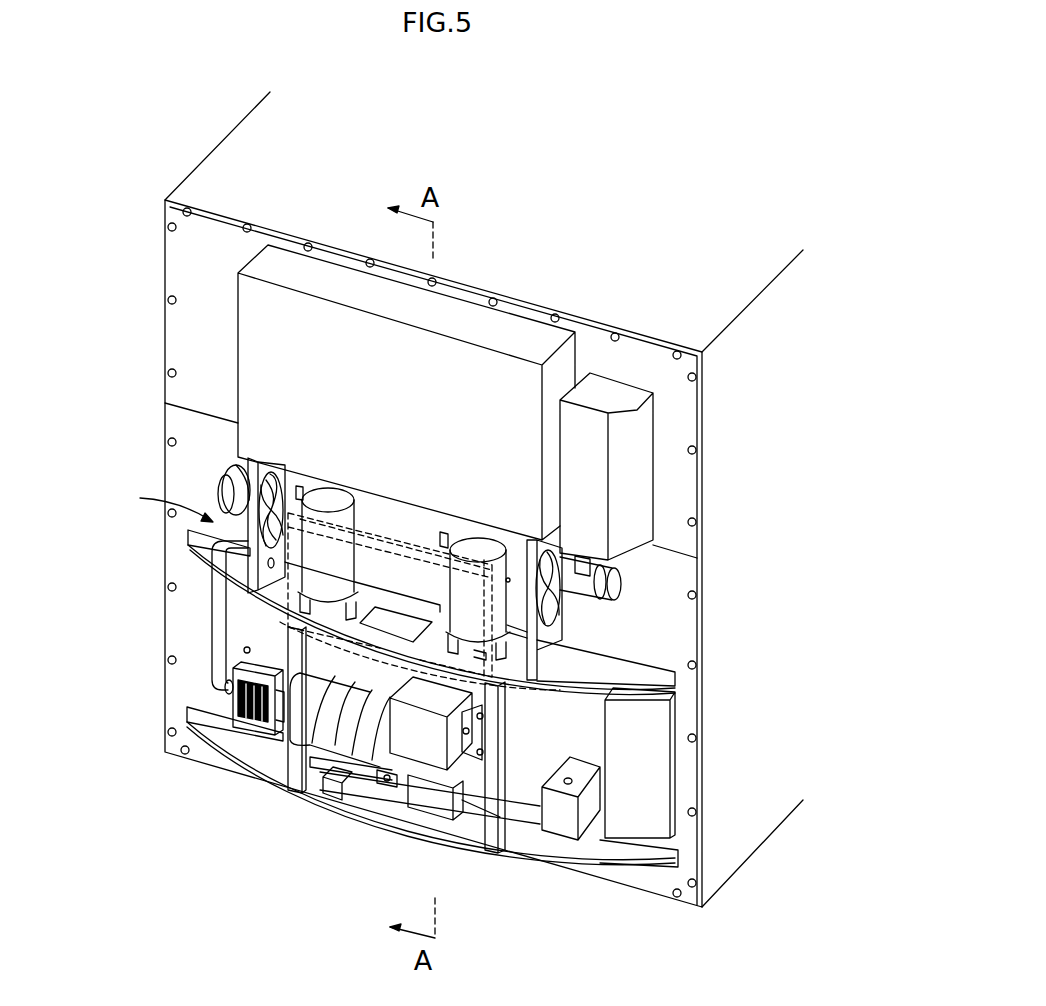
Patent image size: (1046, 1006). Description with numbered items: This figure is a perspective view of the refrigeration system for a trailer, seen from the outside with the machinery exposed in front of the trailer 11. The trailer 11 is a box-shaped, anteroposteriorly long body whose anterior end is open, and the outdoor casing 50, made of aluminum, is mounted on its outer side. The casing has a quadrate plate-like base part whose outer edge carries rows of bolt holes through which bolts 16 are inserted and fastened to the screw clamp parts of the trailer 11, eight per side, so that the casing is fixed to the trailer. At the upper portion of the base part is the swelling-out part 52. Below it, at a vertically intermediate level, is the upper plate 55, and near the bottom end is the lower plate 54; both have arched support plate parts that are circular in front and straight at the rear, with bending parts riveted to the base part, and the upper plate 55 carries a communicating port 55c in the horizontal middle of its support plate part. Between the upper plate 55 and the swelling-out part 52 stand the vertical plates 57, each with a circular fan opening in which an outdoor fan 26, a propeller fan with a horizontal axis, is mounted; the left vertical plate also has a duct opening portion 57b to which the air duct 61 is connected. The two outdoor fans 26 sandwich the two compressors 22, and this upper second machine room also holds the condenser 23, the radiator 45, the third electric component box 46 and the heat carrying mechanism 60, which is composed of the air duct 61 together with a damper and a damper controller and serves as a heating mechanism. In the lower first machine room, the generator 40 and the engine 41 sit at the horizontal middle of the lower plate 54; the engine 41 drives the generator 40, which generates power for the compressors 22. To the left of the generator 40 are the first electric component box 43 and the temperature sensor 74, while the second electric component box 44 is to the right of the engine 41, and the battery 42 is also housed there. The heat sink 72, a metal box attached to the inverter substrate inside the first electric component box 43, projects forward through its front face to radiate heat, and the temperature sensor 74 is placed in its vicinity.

The trailer 11 is at (212, 150).
The bolts 16 is at (362, 262).
The outdoor casing 50 is at (162, 276).
The swelling-out part 52 is at (440, 363).
The third electric component box 46 is at (623, 477).
The outdoor fans 26 is at (232, 488).
The vertical plates 57 is at (255, 528).
The heat carrying mechanism 60 is at (165, 495).
The compressors 22 is at (332, 497).
The condenser 23 is at (377, 527).
The radiator 45 is at (417, 533).
The upper plate 55 is at (190, 548).
The communicating port 55c is at (402, 628).
The duct opening portion 57b is at (242, 603).
The air duct 61 is at (215, 625).
The temperature sensor 74 is at (244, 652).
The lower plate 54 is at (210, 730).
The heat sink 72 is at (232, 700).
The first electric component box 43 is at (267, 713).
The generator 40 is at (333, 725).
The engine 41 is at (427, 745).
The battery 42 is at (558, 817).
The second electric component box 44 is at (635, 818).